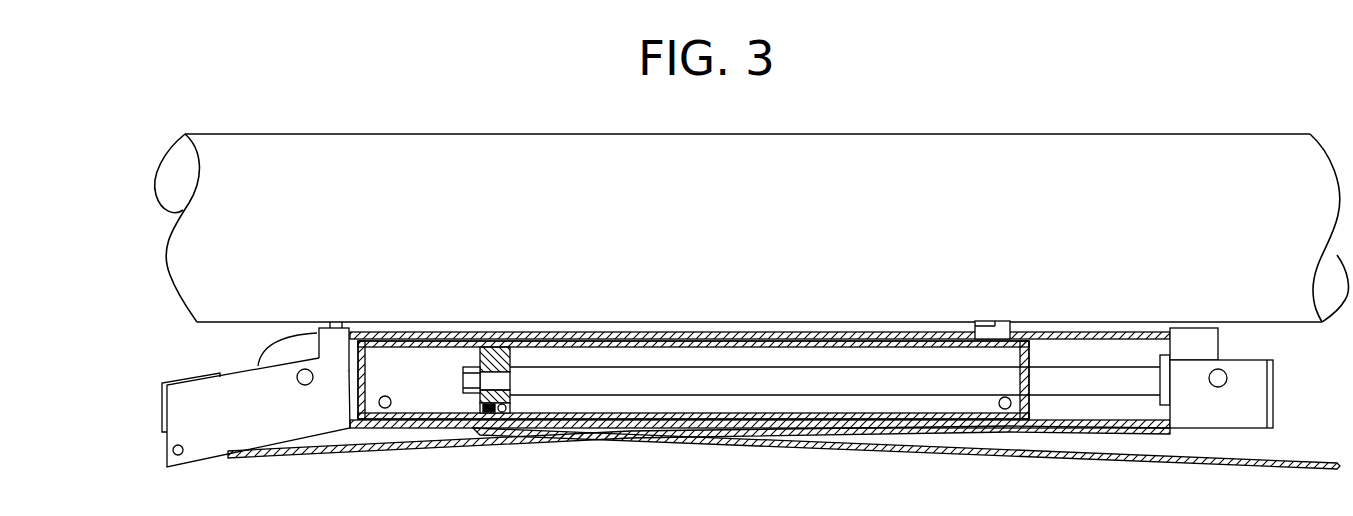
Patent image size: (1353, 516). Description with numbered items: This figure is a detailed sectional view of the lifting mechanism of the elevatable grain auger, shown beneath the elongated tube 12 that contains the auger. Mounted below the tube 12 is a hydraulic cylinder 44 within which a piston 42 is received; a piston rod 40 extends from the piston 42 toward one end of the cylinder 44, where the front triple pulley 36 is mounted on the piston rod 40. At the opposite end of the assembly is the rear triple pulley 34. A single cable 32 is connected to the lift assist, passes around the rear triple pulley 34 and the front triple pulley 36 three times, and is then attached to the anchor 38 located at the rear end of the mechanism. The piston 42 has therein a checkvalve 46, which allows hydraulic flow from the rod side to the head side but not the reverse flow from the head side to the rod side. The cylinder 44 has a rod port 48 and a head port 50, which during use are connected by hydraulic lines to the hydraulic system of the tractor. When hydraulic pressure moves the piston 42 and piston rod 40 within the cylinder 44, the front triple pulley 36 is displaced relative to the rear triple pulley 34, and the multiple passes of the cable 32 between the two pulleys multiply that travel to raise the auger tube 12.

The elongated tube 12 is at (972, 162).
The single cable 32 is at (1005, 452).
The rear triple pulley 34 is at (277, 357).
The front triple pulley 36 is at (1237, 347).
The anchor 38 is at (182, 455).
The piston rod 40 is at (1102, 377).
The piston 42 is at (490, 348).
The hydraulic cylinder 44 is at (803, 348).
The checkvalve 46 is at (477, 405).
The rod port 48 is at (1007, 398).
The head port 50 is at (386, 404).